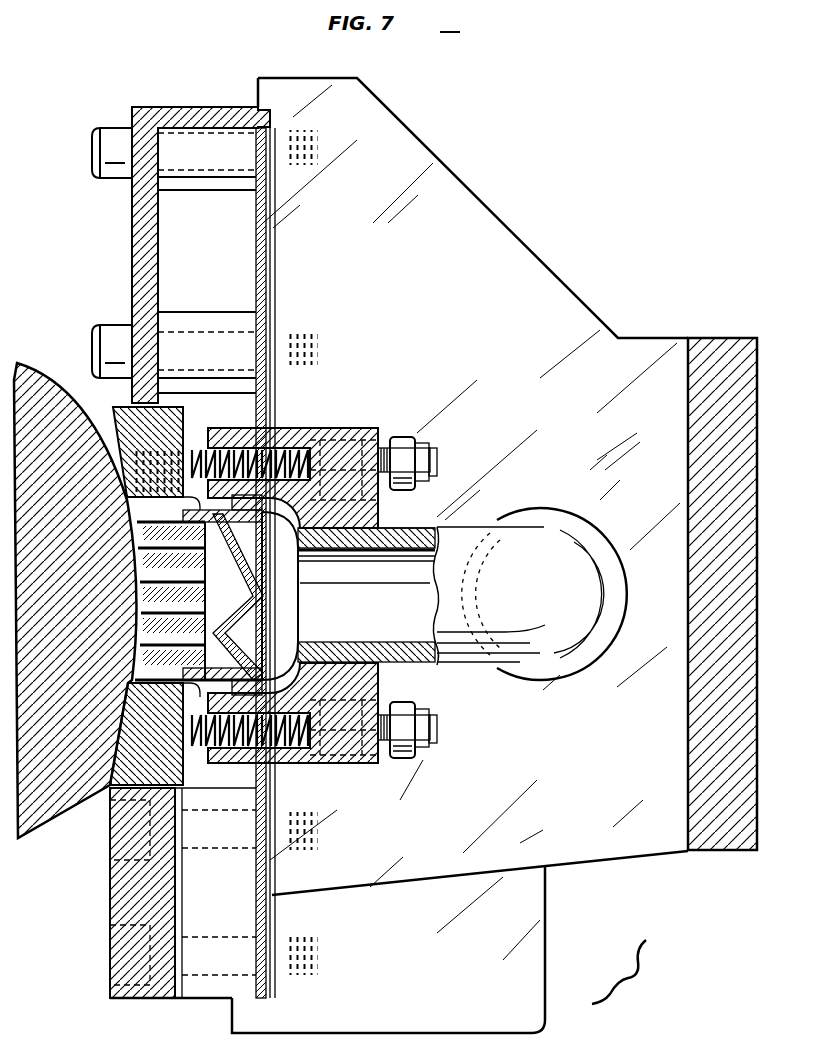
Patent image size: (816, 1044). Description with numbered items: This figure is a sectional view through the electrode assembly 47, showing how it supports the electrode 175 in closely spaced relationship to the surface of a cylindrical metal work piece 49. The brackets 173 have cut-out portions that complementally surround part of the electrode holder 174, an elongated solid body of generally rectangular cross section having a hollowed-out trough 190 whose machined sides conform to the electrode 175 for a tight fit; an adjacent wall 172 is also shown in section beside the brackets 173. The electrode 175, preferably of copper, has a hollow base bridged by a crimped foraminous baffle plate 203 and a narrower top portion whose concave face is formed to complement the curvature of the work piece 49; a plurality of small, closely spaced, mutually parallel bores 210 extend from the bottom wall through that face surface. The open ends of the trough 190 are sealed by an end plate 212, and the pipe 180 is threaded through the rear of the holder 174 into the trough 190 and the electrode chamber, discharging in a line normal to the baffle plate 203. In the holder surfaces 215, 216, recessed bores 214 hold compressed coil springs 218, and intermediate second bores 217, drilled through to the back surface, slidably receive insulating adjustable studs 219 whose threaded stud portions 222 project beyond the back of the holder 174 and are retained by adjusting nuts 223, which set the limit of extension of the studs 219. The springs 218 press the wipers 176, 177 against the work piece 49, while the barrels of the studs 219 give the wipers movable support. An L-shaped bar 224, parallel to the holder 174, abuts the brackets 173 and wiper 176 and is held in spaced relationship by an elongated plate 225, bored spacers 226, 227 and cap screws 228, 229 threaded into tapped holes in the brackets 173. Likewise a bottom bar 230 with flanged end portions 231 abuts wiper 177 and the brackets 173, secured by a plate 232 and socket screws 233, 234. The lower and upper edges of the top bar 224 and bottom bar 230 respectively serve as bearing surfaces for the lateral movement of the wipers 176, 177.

The electrode assembly 47 is at (630, 974).
The work piece 49 is at (33, 393).
The wall 172 is at (718, 358).
The bracket 173 is at (650, 840).
The electrode holder 174 is at (358, 428).
The electrode 175 is at (250, 633).
The wiper 176 is at (125, 410).
The wiper 177 is at (110, 775).
The pipe 180 is at (540, 540).
The trough 190 is at (300, 577).
The baffle plate 203 is at (232, 597).
The bores 210 is at (190, 552).
The end plate 212 is at (298, 600).
The recessed bores 214 is at (292, 428).
The surface 215 is at (205, 428).
The surface 216 is at (200, 760).
The second bores 217 is at (340, 507).
The coil spring 218 is at (292, 452).
The adjustable stud 219 is at (192, 440).
The stud portion 222 is at (430, 462).
The adjusting nut 223 is at (402, 438).
The L-shaped bar 224 is at (135, 237).
The elongated plate 225 is at (257, 250).
The bored spacer 226 is at (200, 320).
The bored spacer 227 is at (205, 180).
The cap screw 228 is at (110, 330).
The cap screw 229 is at (105, 152).
The bottom bar 230 is at (122, 893).
The flanged end portion 231 is at (207, 990).
The plate 232 is at (262, 868).
The socket screw 233 is at (330, 832).
The socket screw 234 is at (340, 946).